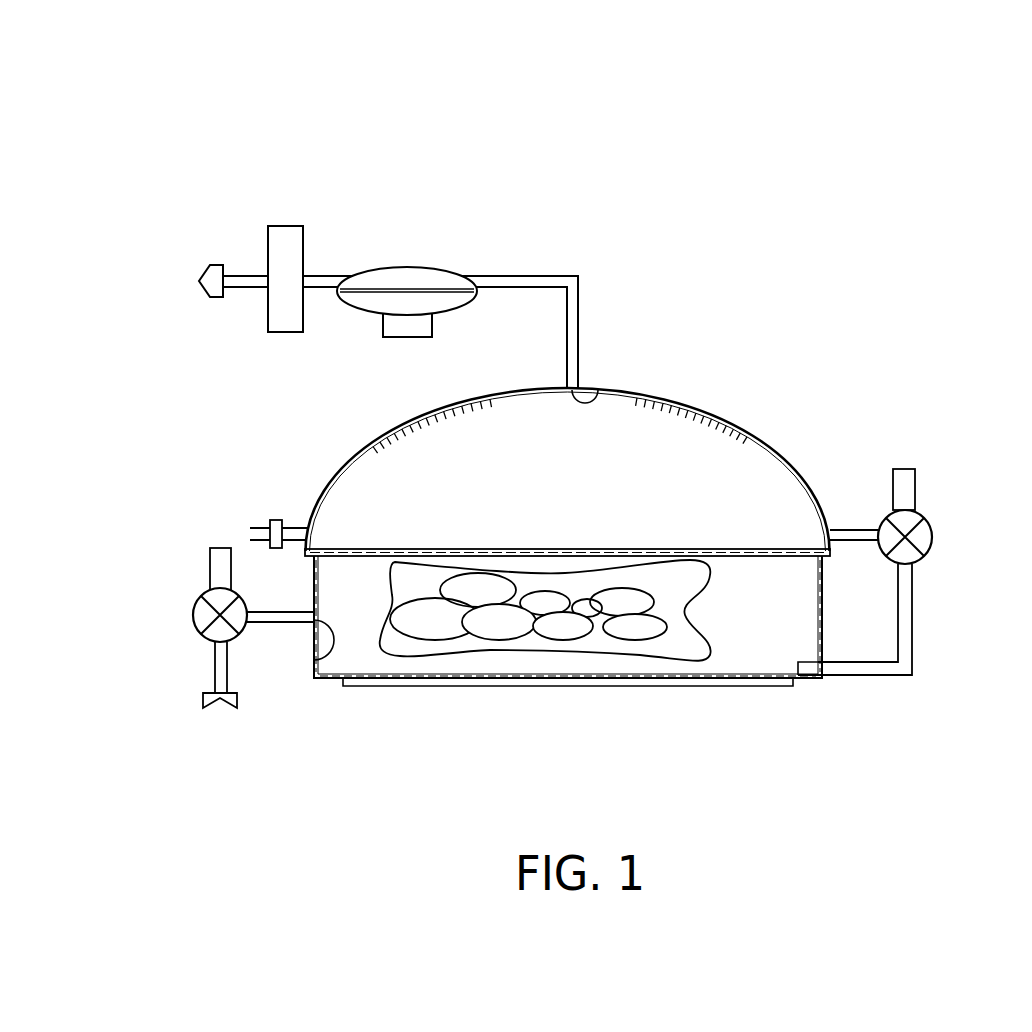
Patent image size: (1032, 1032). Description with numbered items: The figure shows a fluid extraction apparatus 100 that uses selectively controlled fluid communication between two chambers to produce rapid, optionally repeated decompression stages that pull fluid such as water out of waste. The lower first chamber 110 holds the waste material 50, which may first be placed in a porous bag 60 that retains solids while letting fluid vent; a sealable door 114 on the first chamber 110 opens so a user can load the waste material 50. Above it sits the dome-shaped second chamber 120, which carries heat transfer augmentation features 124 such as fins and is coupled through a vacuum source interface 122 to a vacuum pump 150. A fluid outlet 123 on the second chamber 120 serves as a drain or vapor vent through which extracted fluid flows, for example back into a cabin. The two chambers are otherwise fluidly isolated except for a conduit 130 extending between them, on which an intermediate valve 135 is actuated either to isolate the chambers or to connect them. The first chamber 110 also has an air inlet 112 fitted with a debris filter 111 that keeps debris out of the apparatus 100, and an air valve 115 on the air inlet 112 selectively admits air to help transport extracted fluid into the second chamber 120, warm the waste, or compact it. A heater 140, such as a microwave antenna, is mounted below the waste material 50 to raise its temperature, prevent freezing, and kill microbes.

The fluid extraction apparatus 100 is at (163, 126).
The vacuum pump 150 is at (420, 247).
The second chamber 120 is at (777, 447).
The heat transfer augmentation features 124 is at (375, 453).
The vacuum source interface 122 is at (600, 390).
The fluid outlet 123 is at (297, 523).
The first chamber 110 is at (817, 680).
The air inlet 112 is at (313, 658).
The sealable door 114 is at (823, 632).
The heater 140 is at (412, 690).
The air valve 115 is at (183, 617).
The debris filter 111 is at (203, 698).
The intermediate valve 135 is at (943, 537).
The conduit 130 is at (913, 592).
The porous bag 60 is at (653, 662).
The waste material 50 is at (627, 603).